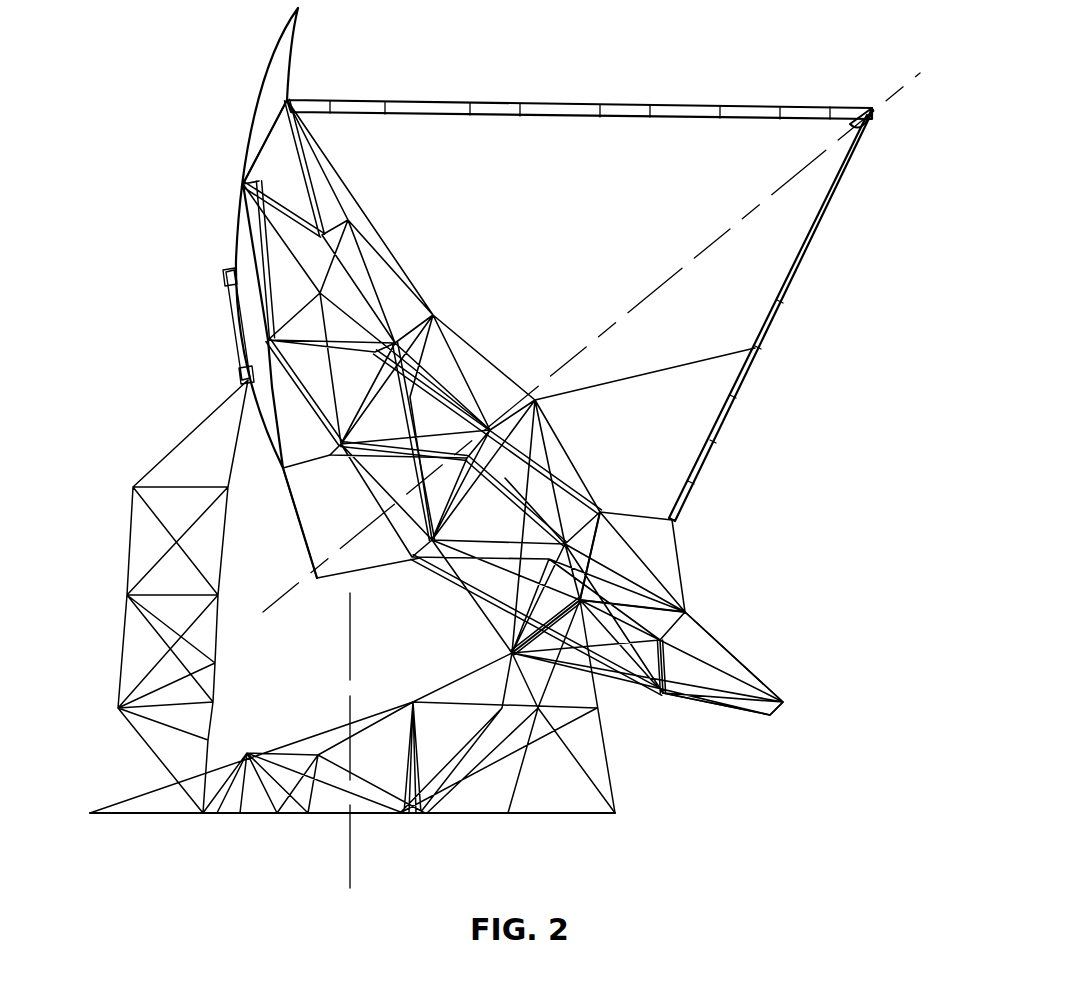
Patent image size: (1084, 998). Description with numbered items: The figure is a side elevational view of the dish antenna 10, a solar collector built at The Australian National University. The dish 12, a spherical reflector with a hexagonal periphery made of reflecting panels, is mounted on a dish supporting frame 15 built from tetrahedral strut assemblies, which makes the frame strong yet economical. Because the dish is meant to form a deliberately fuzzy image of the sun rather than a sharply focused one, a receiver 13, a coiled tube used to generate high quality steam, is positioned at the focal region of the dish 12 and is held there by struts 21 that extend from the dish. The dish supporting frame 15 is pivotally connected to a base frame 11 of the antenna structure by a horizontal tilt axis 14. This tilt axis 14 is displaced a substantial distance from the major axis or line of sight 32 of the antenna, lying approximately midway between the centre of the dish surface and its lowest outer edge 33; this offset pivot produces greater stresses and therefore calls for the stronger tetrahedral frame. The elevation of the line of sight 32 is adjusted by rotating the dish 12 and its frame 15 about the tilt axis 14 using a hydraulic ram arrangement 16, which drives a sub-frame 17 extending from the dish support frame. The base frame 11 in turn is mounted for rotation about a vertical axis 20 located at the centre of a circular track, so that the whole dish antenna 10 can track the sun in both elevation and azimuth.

The dish antenna 10 is at (505, 448).
The base frame 11 is at (593, 757).
The dish 12 is at (438, 306).
The receiver 13 is at (853, 125).
The horizontal tilt axis 14 is at (640, 584).
The dish supporting frame 15 is at (668, 700).
The hydraulic ram arrangement 16 is at (238, 322).
The sub-frame 17 is at (298, 524).
The vertical axis 20 is at (348, 657).
The struts 21 is at (706, 112).
The line of sight 32 is at (665, 282).
The lowest outer edge 33 is at (792, 702).